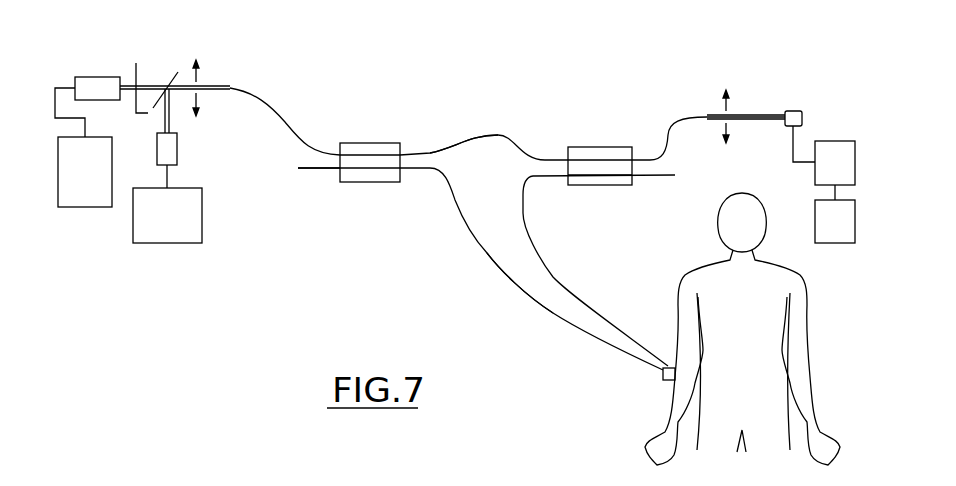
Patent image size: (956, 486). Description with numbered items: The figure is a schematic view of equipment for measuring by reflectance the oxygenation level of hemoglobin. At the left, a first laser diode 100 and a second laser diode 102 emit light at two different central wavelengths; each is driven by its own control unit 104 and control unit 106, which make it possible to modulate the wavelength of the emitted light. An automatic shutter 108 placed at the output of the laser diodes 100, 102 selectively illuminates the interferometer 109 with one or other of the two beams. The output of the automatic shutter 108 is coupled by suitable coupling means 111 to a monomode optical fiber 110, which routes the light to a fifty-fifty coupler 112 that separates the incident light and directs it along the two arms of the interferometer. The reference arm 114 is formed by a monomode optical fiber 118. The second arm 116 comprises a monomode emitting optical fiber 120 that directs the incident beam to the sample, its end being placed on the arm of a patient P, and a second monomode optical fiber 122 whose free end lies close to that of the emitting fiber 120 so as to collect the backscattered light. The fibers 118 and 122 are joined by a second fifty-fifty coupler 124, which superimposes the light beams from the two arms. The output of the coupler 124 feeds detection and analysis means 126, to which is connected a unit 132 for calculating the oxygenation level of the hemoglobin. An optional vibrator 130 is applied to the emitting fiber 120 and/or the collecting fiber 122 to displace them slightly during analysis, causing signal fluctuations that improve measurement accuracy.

The first laser diode 100 is at (93, 90).
The second laser diode 102 is at (172, 150).
The control unit 104 is at (101, 176).
The control unit 106 is at (183, 226).
The automatic shutter 108 is at (145, 77).
The interferometer 109 is at (360, 208).
The optical fiber 110 is at (281, 117).
The coupling means 111 is at (198, 84).
The 50/50 coupler 112 is at (363, 138).
The reference arm 114 is at (467, 128).
The second arm 116 is at (450, 225).
The monomode optical fiber 118 is at (498, 135).
The emitting optical fiber 120 is at (513, 285).
The collecting optical fiber 122 is at (573, 300).
The 50/50 coupler 124 is at (598, 142).
The detection and analysis means 126 is at (818, 97).
The vibrator 130 is at (663, 377).
The unit for calculating the oxygenation level 132 is at (825, 225).
The patient P is at (745, 353).